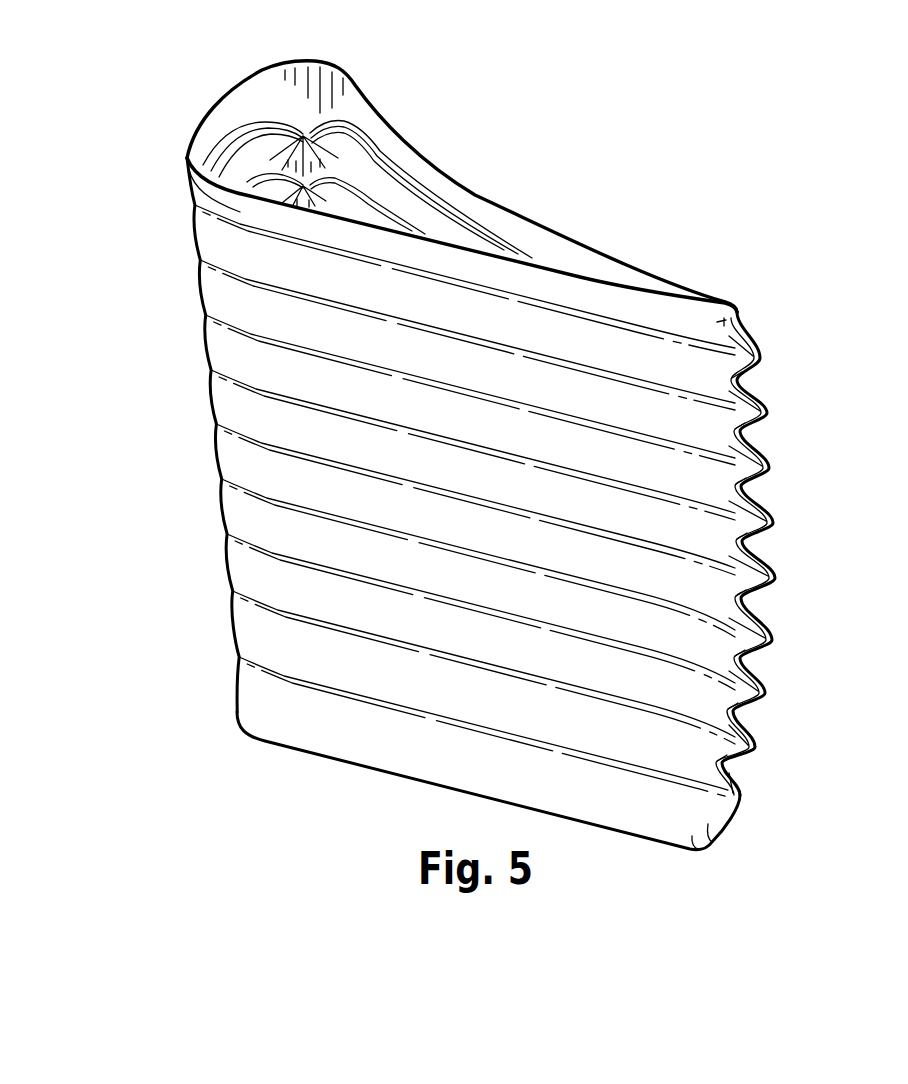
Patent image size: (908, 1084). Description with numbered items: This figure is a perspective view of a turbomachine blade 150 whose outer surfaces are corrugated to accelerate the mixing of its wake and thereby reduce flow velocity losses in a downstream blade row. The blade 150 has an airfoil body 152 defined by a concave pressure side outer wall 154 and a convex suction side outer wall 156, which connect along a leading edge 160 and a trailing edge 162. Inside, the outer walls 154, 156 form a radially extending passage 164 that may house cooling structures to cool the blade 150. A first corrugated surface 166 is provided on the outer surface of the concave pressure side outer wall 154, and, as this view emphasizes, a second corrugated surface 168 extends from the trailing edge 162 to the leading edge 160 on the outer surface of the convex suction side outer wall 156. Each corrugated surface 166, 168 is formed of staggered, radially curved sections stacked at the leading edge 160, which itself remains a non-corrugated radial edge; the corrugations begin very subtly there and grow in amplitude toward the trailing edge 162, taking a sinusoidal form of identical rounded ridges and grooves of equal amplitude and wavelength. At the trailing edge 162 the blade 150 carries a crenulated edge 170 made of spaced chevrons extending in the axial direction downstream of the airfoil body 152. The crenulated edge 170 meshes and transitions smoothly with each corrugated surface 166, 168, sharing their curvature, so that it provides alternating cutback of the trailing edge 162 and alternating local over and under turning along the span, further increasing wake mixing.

The blade 150 is at (186, 319).
The airfoil body 152 is at (200, 120).
The concave pressure side outer wall 154 is at (457, 540).
The convex suction side outer wall 156 is at (513, 212).
The leading edge 160 is at (318, 62).
The trailing edge 162 is at (736, 318).
The radially extending passage 164 is at (283, 112).
The first corrugated surface 166 is at (393, 202).
The second corrugated surface 168 is at (332, 736).
The crenulated edge 170 is at (798, 700).